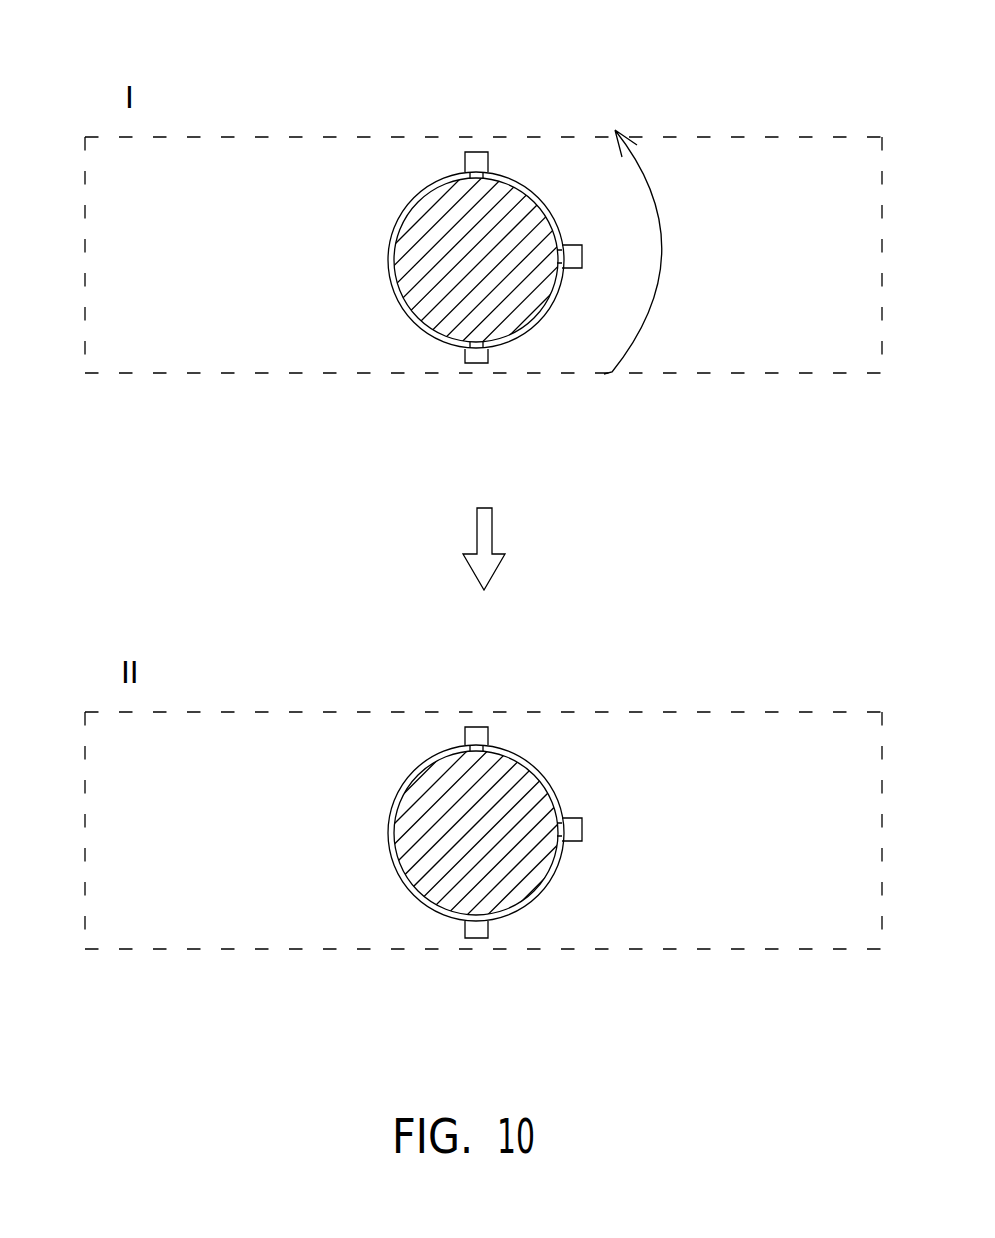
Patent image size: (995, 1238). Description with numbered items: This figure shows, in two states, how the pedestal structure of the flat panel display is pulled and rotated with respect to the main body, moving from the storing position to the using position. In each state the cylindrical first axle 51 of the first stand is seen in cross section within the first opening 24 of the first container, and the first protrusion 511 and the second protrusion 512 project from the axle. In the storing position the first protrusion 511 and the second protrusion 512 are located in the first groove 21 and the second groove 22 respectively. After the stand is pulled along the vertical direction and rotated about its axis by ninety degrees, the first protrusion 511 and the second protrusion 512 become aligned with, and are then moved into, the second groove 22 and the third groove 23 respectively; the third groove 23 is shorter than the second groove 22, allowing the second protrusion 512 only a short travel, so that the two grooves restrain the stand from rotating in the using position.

The first groove 21 is at (473, 355).
The second groove 22 is at (598, 233).
The third groove 23 is at (495, 140).
The first opening 24 is at (738, 170).
The first axle 51 is at (433, 223).
The first protrusion 511 is at (465, 348).
The second protrusion 512 is at (567, 270).